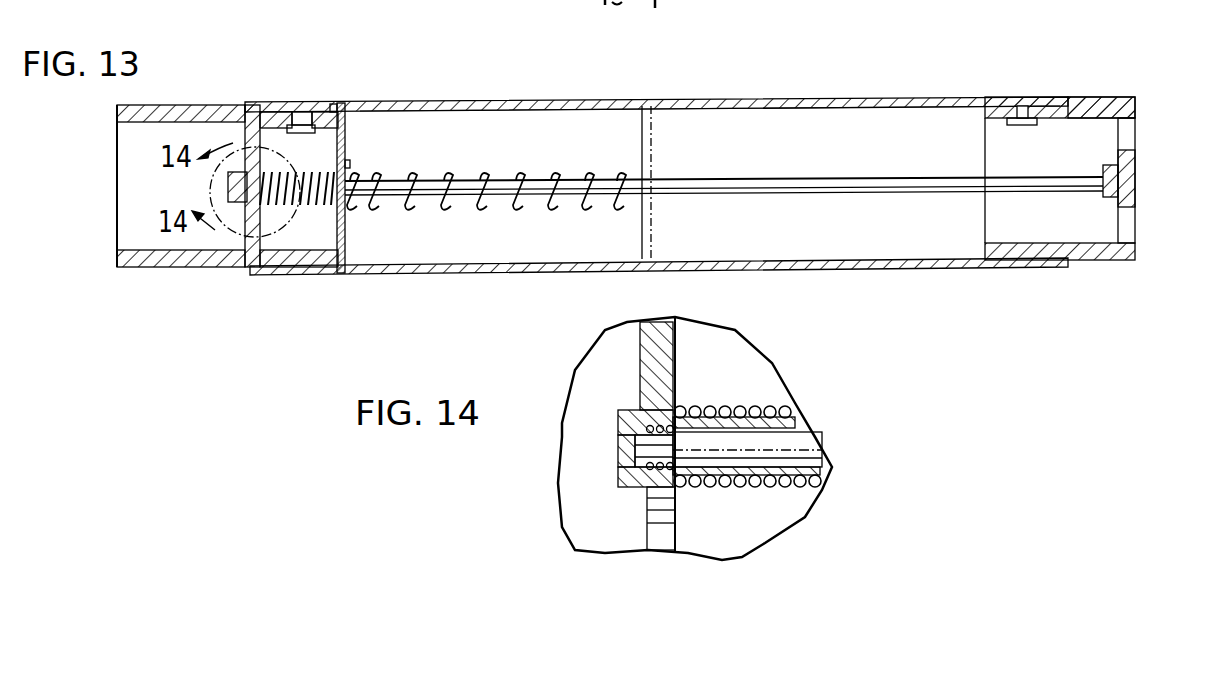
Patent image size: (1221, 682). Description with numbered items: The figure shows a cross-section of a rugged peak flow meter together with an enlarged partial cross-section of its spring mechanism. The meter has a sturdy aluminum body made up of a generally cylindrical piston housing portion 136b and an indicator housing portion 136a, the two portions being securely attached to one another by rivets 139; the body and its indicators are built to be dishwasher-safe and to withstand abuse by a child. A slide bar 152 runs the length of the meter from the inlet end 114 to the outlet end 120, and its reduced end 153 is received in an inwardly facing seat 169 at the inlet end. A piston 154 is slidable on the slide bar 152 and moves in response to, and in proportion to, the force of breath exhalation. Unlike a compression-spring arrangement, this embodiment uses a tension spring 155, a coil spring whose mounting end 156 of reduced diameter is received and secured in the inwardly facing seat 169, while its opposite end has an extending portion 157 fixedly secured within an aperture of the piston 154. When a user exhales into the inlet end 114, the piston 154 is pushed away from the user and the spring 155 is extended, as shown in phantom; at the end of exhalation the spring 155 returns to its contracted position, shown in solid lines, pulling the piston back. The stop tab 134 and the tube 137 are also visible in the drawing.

In FIG. 13, the inlet end 114 is at (117, 262).
In FIG. 14, the inlet end 114 is at (618, 483).
In FIG. 13, the outlet end 120 is at (1136, 253).
In FIG. 13, the stop tab 134 is at (1021, 105).
In FIG. 13, the indicator housing portion 136a is at (365, 104).
In FIG. 13, the piston housing portion 136b is at (330, 108).
In FIG. 13, the tube 137 is at (402, 102).
In FIG. 13, the rivets 139 is at (302, 110).
In FIG. 13, the slide bar 152 is at (866, 153).
In FIG. 14, the slide bar 152 is at (788, 443).
In FIG. 13, the reduced end 153 is at (230, 187).
In FIG. 14, the reduced end 153 is at (688, 470).
In FIG. 13, the piston 154 is at (348, 142).
In FIG. 13, the tension spring 155 is at (446, 173).
In FIG. 14, the tension spring 155 is at (735, 407).
In FIG. 13, the mounting end 156 is at (262, 245).
In FIG. 13, the extending portion 157 is at (350, 166).
In FIG. 13, the inwardly facing seat 169 is at (222, 240).
In FIG. 14, the inwardly facing seat 169 is at (618, 443).